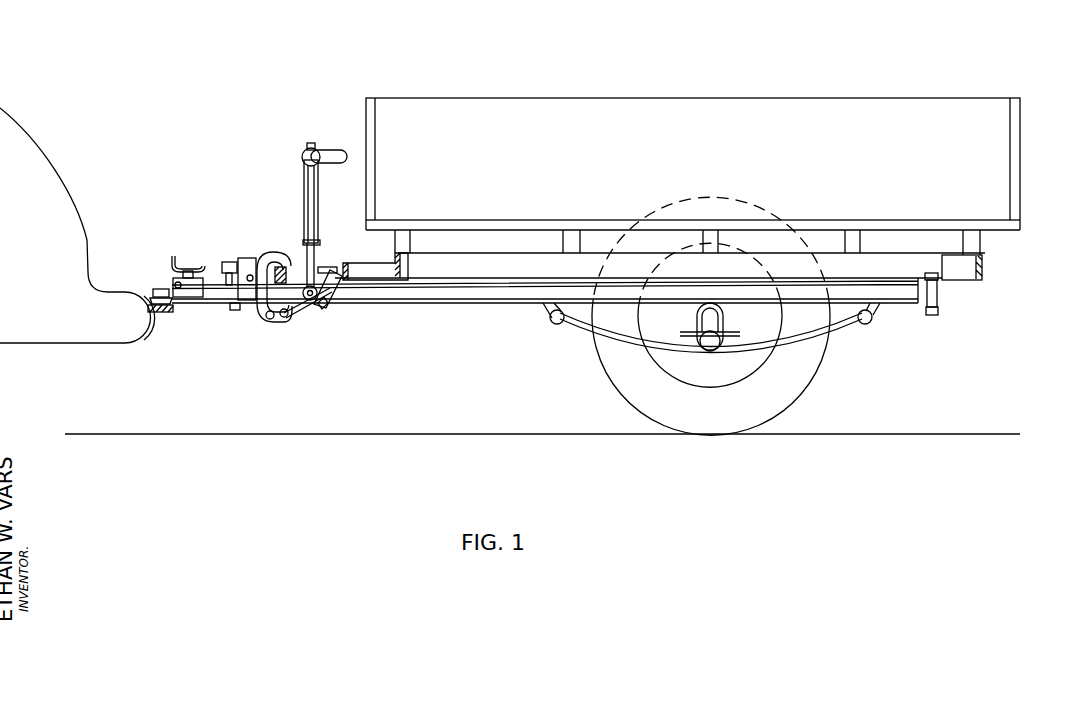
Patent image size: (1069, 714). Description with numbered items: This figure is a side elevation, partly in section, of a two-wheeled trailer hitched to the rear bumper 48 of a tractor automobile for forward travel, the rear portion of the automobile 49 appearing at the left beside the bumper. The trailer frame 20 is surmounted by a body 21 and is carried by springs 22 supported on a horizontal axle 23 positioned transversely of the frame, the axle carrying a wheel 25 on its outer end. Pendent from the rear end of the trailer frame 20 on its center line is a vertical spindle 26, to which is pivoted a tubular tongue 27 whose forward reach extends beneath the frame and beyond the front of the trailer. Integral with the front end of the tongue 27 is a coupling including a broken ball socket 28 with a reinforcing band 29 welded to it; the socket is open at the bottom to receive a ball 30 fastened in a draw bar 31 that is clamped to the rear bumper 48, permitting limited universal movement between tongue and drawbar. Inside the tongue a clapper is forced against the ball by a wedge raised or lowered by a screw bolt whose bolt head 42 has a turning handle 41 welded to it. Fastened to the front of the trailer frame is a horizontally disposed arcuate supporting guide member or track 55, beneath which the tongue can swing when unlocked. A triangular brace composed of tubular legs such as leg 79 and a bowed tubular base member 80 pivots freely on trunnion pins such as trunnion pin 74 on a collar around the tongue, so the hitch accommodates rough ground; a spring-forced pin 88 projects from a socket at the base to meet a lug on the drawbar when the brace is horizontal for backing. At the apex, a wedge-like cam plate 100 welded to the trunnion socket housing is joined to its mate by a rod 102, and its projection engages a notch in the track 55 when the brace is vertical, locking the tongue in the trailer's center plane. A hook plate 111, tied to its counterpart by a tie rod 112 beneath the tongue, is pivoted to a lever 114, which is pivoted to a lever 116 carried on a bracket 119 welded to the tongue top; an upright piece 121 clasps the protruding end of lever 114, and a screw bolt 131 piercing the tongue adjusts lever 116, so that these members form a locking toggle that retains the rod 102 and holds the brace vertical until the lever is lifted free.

The trailer frame 20 is at (983, 268).
The body 21 is at (1012, 198).
The springs 22 is at (838, 328).
The horizontal axle 23 is at (697, 316).
The wheel 25 is at (800, 375).
The vertical spindle 26 is at (940, 300).
The tubular tongue 27 is at (890, 297).
The broken ball socket 28 is at (160, 290).
The reinforcing band 29 is at (156, 300).
The ball 30 is at (170, 290).
The draw bar 31 is at (162, 312).
The turning handle 41 is at (176, 258).
The bolt head 42 is at (191, 272).
The rear bumper 48 is at (142, 298).
The towing vehicle fender 49 is at (82, 236).
The supporting guide member or track 55 is at (362, 270).
The trunnion pin 74 is at (324, 308).
The tubular side arm or leg 79 is at (305, 170).
The tubular base member 80 is at (337, 150).
The pin 88 is at (284, 107).
The cam plate 100 is at (296, 311).
The rod 102 is at (287, 318).
The hook plate 111 is at (267, 253).
The tie rod 112 is at (273, 319).
The lever 114 is at (247, 258).
The lever 116 is at (280, 268).
The bracket 119 is at (251, 284).
The upright piece 121 is at (236, 262).
The screw bolt 131 is at (234, 310).